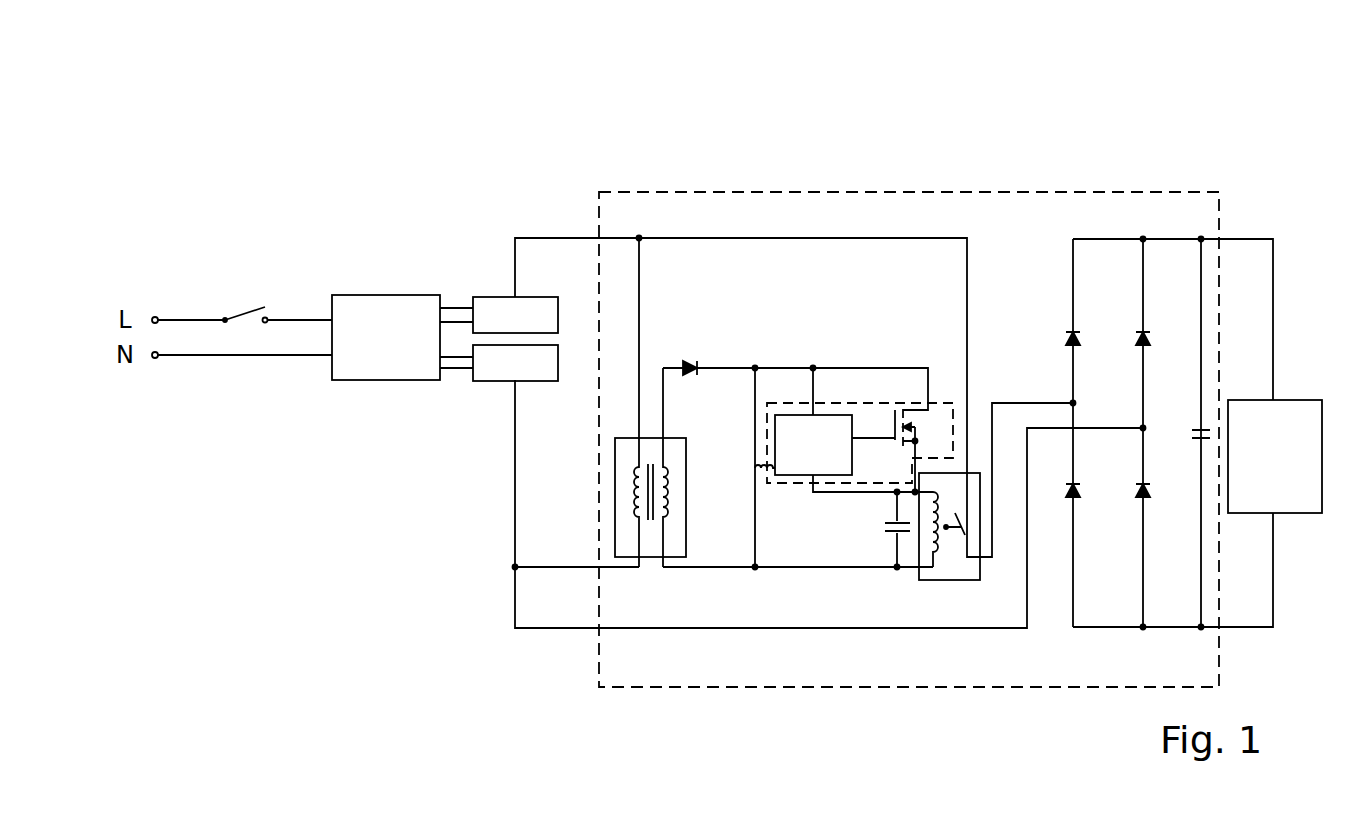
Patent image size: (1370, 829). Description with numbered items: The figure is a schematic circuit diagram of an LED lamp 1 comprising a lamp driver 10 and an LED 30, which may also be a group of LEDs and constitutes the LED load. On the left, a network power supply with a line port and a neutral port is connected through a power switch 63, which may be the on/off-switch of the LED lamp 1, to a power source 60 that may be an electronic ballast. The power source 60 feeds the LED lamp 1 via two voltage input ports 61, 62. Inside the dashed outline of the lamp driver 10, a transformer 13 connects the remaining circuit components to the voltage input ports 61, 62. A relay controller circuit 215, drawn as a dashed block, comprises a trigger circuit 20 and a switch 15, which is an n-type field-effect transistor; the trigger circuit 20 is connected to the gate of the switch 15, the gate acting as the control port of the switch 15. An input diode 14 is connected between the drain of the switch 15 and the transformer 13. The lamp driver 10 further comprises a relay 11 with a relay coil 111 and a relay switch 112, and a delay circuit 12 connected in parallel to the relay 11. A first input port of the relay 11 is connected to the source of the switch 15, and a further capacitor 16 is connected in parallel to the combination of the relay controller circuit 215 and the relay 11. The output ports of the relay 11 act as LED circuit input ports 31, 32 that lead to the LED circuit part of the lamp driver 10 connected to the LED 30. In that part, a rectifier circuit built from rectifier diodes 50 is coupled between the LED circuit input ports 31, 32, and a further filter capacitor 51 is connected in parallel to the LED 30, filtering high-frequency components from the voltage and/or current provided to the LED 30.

The LED lamp 1 is at (1222, 135).
The lamp driver 10 is at (804, 191).
The relay 11 is at (964, 512).
The relay coil 111 is at (928, 520).
The relay switch 112 is at (968, 527).
The delay circuit 12 is at (887, 531).
The transformer 13 is at (655, 562).
The input diode 14 is at (690, 360).
The switch 15 is at (919, 437).
The further capacitor 16 is at (750, 467).
The trigger circuit 20 is at (813, 445).
The relay controller circuit 215 is at (878, 400).
The LED 30 is at (1275, 456).
The LED circuit input port 31 is at (1012, 400).
The LED circuit input port 32 is at (1045, 432).
The rectifier diode 50 is at (1152, 492).
The further filter capacitor 51 is at (1192, 432).
The power source 60 is at (402, 337).
The voltage input port 61 is at (515, 315).
The voltage input port 62 is at (515, 363).
The power switch 63 is at (240, 304).